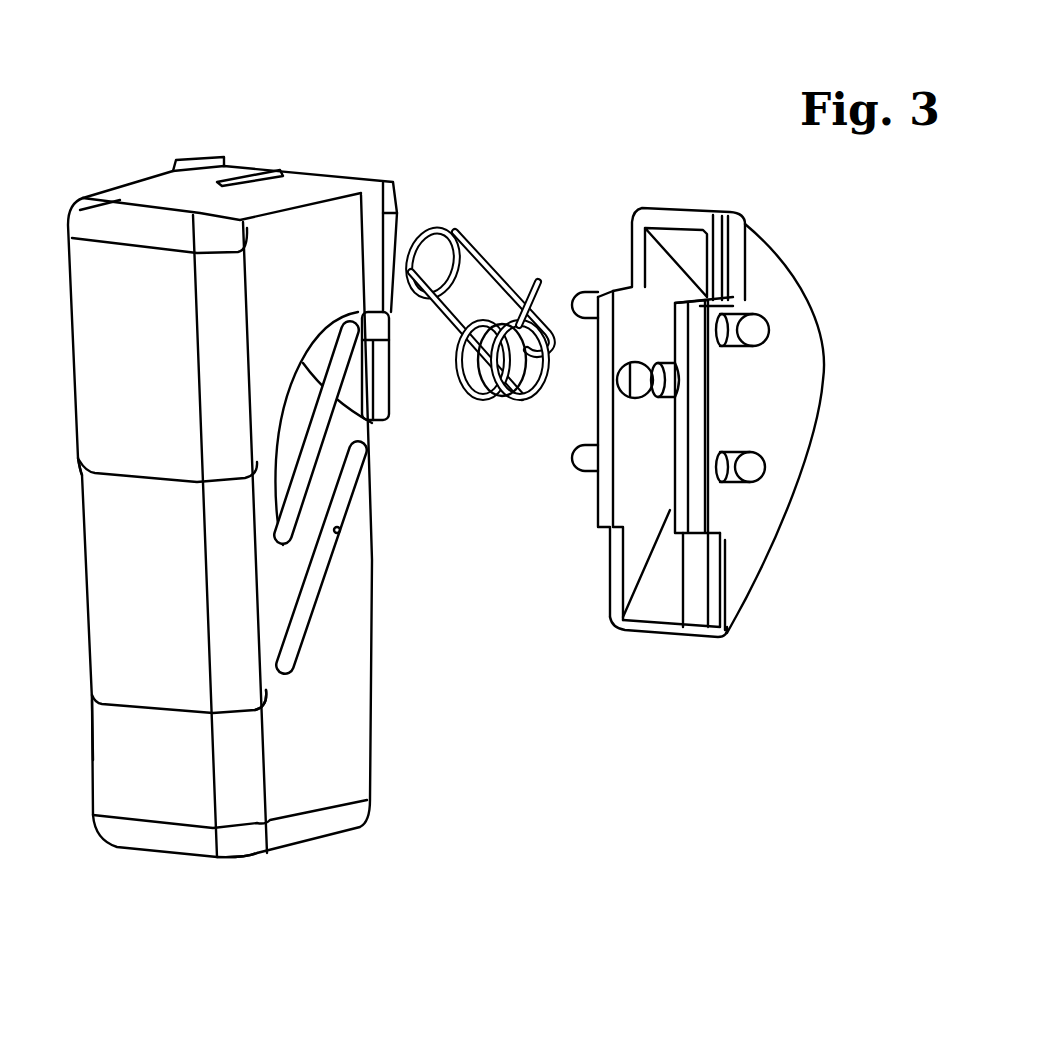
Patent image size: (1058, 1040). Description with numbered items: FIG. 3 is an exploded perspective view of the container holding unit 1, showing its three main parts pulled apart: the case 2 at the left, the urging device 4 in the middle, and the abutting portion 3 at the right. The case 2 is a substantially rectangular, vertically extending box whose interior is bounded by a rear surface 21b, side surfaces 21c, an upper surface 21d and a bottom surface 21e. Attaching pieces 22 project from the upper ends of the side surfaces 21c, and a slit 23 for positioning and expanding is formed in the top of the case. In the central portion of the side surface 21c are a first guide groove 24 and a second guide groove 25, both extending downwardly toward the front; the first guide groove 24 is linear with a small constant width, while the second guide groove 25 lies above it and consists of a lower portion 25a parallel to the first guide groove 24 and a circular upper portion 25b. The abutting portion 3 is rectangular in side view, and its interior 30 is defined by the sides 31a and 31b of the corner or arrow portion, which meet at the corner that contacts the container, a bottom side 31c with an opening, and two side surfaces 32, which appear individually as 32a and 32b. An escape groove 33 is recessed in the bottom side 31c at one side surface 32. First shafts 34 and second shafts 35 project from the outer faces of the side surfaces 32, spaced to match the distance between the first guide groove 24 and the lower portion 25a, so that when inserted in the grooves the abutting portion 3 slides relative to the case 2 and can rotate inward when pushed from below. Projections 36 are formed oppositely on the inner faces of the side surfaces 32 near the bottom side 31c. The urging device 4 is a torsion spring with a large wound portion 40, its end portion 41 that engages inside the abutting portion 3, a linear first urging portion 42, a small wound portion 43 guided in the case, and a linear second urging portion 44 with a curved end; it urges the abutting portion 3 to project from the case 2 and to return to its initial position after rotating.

The container holding unit 1 is at (676, 130).
The case 2 is at (355, 180).
The abutting portion 3 is at (696, 446).
The urging device 4 is at (491, 259).
The rear surface 21b is at (112, 743).
The side surfaces 21c is at (80, 530).
The upper surface 21d is at (140, 193).
The bottom surface 21e is at (277, 850).
The attaching pieces 22 is at (173, 170).
The slit 23 is at (260, 175).
The first guide grooves 24 is at (338, 533).
The second guide grooves 25 is at (482, 443).
The lower portions 25a is at (340, 405).
The upper portions 25b is at (318, 427).
The interior 30 is at (640, 543).
The side 31a is at (777, 270).
The side 31b is at (770, 543).
The bottom side 31c is at (603, 500).
The side surfaces 32 is at (795, 460).
The upper frame portion 32a is at (637, 240).
The lower frame portion 32b is at (610, 613).
The escape groove 33 is at (693, 410).
The first shafts 34 is at (760, 470).
The second shafts 35 is at (580, 303).
The projections 36 is at (630, 383).
The large wound portion 40 is at (503, 400).
The end portion 41 is at (523, 293).
The first urging portion 42 is at (453, 333).
The small wound portion 43 is at (420, 232).
The second urging portion 44 is at (493, 267).